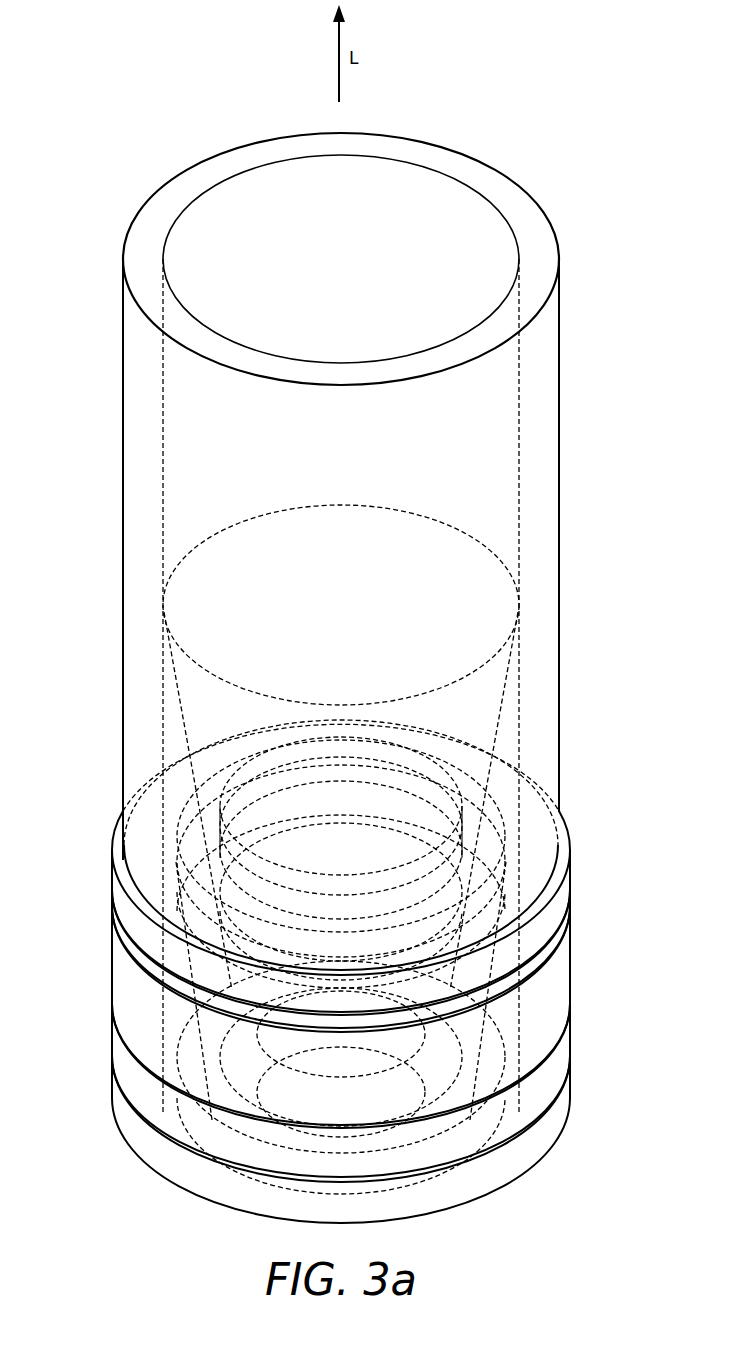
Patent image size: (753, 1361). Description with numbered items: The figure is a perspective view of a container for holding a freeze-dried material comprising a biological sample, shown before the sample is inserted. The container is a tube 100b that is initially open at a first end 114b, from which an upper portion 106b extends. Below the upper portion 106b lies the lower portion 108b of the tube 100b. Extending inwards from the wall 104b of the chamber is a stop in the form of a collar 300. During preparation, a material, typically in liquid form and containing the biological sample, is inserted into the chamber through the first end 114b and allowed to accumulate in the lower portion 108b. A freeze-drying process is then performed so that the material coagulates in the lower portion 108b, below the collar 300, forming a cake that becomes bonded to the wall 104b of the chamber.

The tube 100b is at (210, 168).
The wall of the chamber 104b is at (282, 232).
The upper portion 106b is at (604, 226).
The lower portion 108b is at (604, 807).
The first end 114b is at (468, 218).
The collar 300 is at (117, 816).